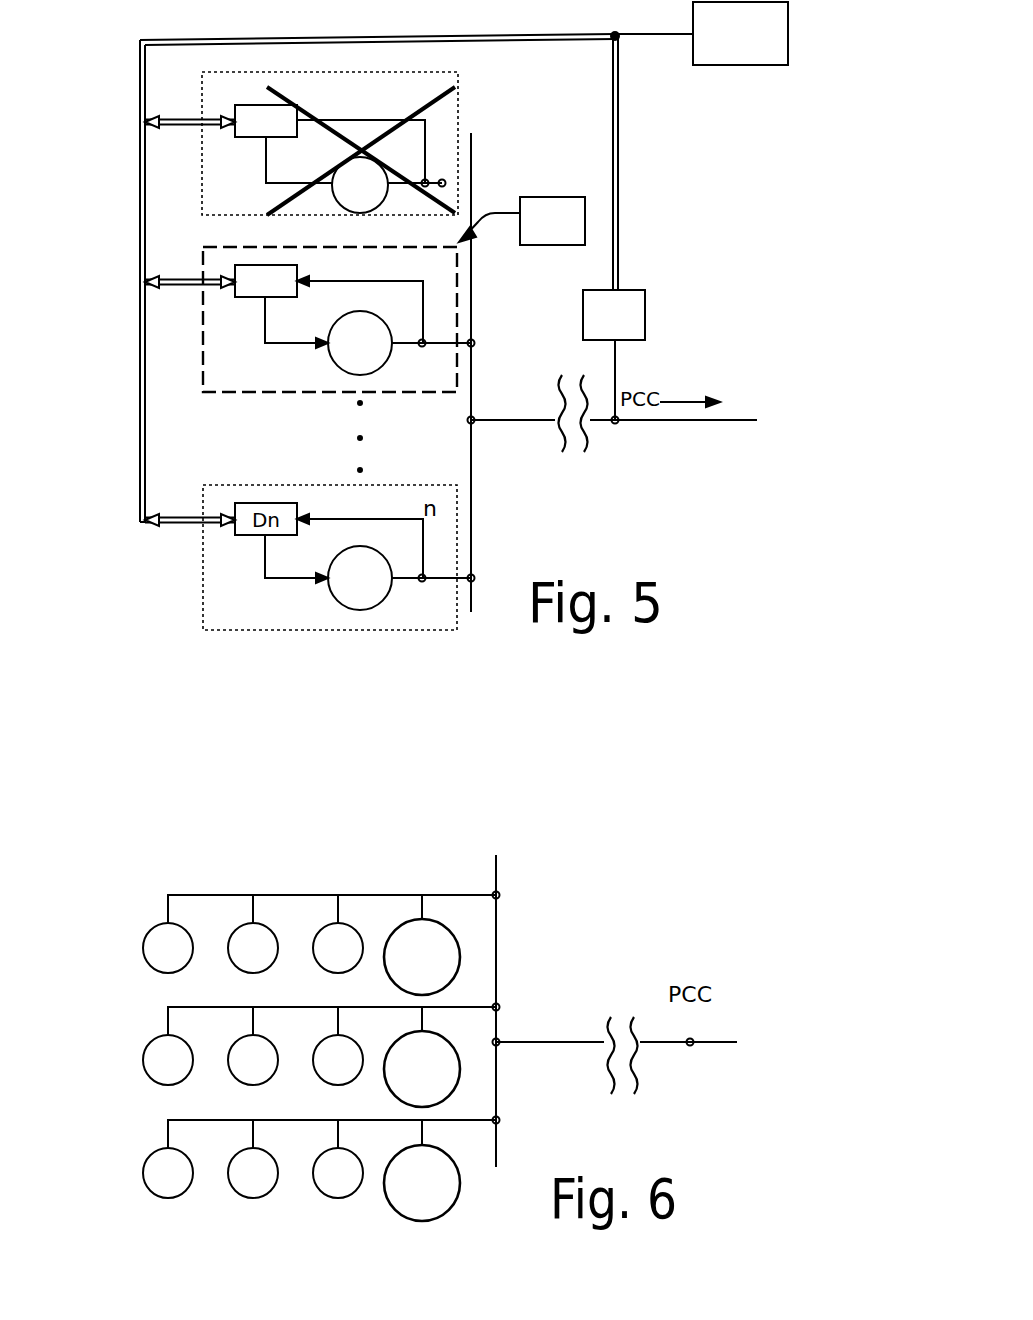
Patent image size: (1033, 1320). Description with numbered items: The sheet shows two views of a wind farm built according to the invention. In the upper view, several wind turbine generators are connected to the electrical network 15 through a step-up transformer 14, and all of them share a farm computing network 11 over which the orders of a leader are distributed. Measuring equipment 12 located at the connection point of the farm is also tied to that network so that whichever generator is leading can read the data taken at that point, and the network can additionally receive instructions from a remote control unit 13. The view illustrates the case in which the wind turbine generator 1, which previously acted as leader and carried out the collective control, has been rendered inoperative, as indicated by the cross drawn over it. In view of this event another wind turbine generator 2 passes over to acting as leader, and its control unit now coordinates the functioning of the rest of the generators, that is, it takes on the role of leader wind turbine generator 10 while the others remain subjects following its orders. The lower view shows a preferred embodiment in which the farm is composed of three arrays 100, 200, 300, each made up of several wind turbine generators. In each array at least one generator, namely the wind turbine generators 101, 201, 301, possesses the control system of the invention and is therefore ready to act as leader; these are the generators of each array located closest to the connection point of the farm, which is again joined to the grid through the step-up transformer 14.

In FIG. 5, the wind turbine generator 1 is at (330, 143).
In FIG. 5, the wind turbine generator 2 is at (337, 319).
In FIG. 5, the leader wind turbine generator 10 is at (522, 221).
In FIG. 5, the farm computing network 11 is at (134, 320).
In FIG. 5, the measuring equipment 12 is at (628, 312).
In FIG. 5, the remote control unit 13 is at (765, 43).
In FIG. 5, the step-up transformer 14 is at (594, 466).
In FIG. 6, the step-up transformer 14 is at (628, 1082).
In FIG. 5, the electrical network 15 is at (702, 418).
In FIG. 6, the array 100 is at (312, 914).
In FIG. 6, the wind turbine generator 101 is at (447, 943).
In FIG. 6, the array 200 is at (318, 1025).
In FIG. 6, the wind turbine generator 201 is at (455, 1050).
In FIG. 6, the array 300 is at (297, 1171).
In FIG. 6, the wind turbine generator 301 is at (440, 1197).